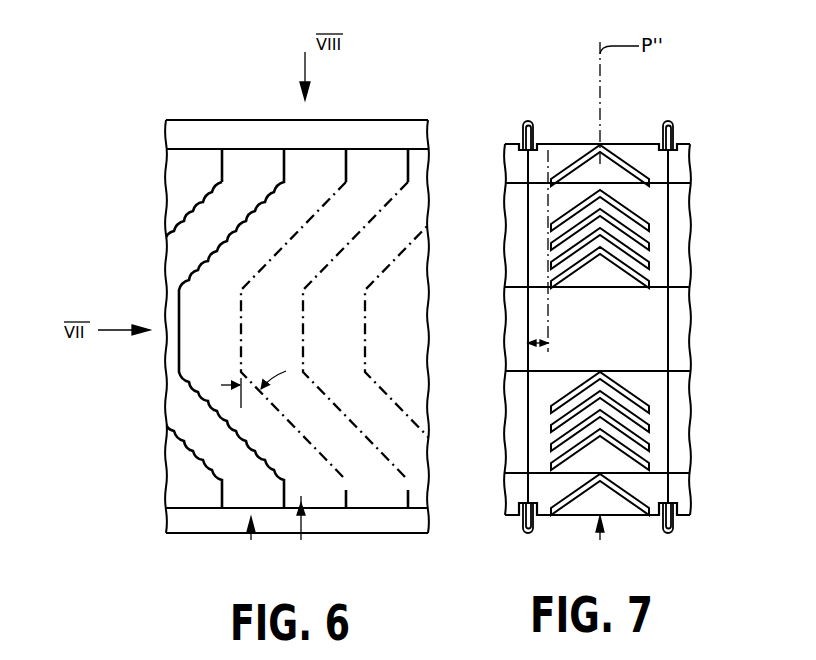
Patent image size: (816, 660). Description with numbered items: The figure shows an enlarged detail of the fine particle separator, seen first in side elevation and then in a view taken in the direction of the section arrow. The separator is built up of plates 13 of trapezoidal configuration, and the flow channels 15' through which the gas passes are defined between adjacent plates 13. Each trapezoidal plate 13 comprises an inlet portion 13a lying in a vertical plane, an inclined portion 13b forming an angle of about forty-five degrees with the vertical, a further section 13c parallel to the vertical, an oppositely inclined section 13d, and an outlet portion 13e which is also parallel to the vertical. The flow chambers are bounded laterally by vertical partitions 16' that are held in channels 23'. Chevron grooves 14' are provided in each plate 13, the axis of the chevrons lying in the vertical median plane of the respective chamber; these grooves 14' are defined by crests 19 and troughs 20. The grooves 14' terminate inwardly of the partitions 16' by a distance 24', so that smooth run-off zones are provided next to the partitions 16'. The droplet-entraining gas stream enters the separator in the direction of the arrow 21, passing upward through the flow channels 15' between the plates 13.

In FIG. 6, the trapezoidal plate 13 is at (243, 333).
In FIG. 7, the trapezoidal plate 13 is at (612, 340).
In FIG. 6, the inlet portion 13a is at (208, 510).
In FIG. 6, the inclined portion 13b is at (210, 463).
In FIG. 6, the further section 13c is at (240, 323).
In FIG. 6, the oppositely inclined section 13d is at (301, 232).
In FIG. 6, the outlet portion 13e is at (292, 149).
In FIG. 6, the chevron grooves 14' is at (171, 183).
In FIG. 7, the chevron grooves 14' is at (611, 299).
In FIG. 6, the flow channels 15' is at (333, 328).
In FIG. 6, the vertical partitions 16' is at (450, 326).
In FIG. 7, the vertical partitions 16' is at (701, 329).
In FIG. 6, the crests 19 is at (190, 213).
In FIG. 6, the troughs 20 is at (198, 270).
In FIG. 6, the arrow 21 is at (258, 541).
In FIG. 7, the arrow 21 is at (592, 541).
In FIG. 6, the channels 23' is at (297, 112).
In FIG. 7, the channels 23' is at (588, 303).
In FIG. 7, the distance 24' is at (506, 275).